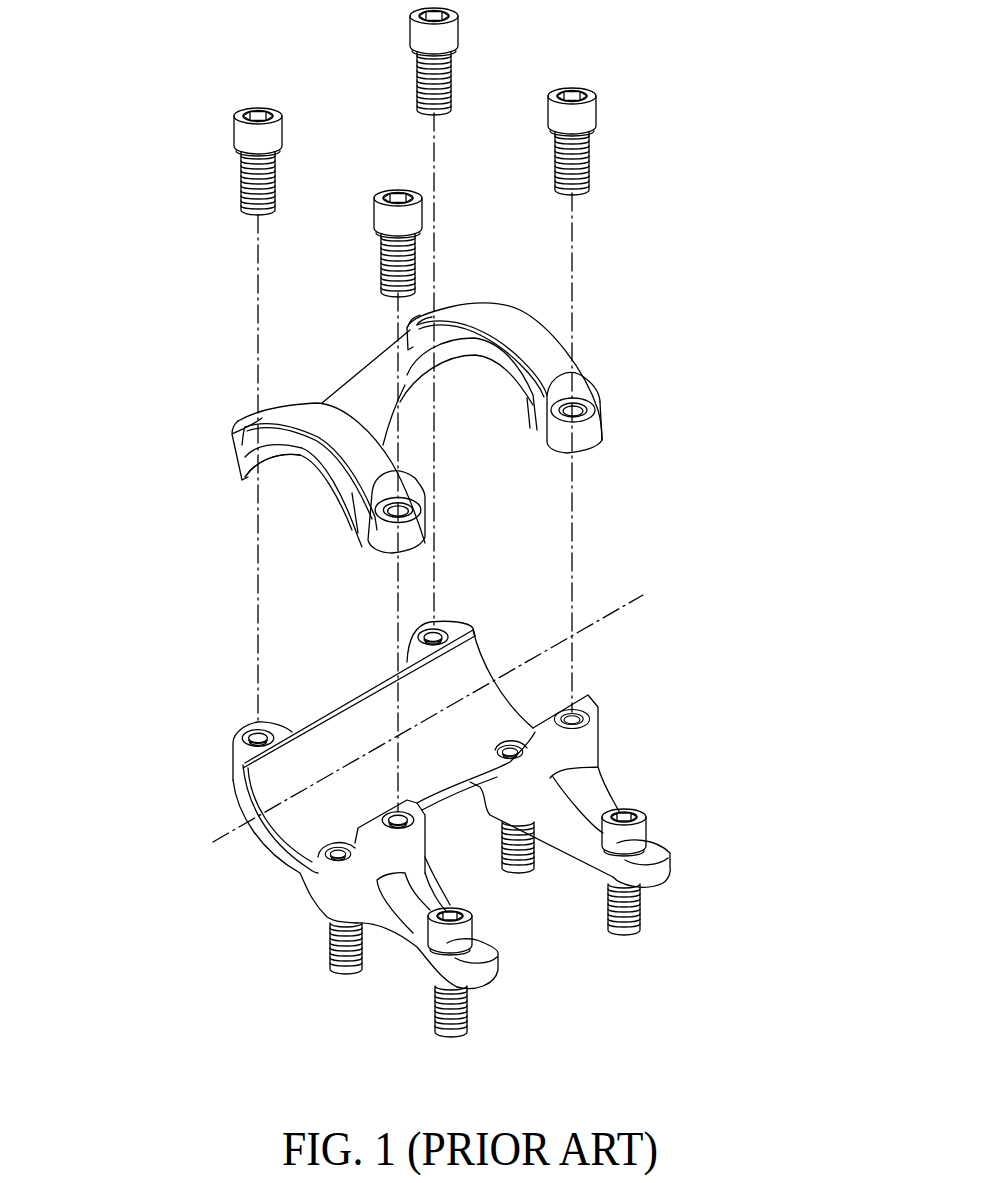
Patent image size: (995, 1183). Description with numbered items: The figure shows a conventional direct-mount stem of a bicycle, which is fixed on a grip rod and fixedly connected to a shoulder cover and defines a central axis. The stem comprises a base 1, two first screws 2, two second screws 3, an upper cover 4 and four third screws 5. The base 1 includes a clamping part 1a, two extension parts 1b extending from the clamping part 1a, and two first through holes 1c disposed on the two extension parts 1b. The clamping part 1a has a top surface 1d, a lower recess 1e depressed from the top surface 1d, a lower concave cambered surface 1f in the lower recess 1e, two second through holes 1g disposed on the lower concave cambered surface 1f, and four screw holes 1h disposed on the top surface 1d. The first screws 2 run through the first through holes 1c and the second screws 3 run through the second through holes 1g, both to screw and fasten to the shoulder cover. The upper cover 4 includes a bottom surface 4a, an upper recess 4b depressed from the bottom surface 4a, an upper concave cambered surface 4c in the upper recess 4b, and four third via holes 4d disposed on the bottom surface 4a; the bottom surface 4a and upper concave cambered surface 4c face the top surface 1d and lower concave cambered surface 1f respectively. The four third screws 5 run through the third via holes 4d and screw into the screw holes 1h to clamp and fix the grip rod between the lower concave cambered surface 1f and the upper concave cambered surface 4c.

The base 1 is at (449, 786).
The clamping part 1a is at (602, 735).
The extension parts 1b is at (672, 851).
The first through holes 1c is at (662, 882).
The top surface 1d is at (450, 620).
The lower recess 1e is at (263, 783).
The lower concave cambered surface 1f is at (290, 833).
The second through holes 1g is at (310, 880).
The screw holes 1h is at (250, 723).
The first screws 2 is at (605, 912).
The second screws 3 is at (433, 1000).
The upper cover 4 is at (451, 405).
The bottom surface 4a is at (592, 452).
The upper recess 4b is at (347, 517).
The upper concave cambered surface 4c is at (270, 465).
The third via holes 4d is at (597, 400).
The third screws 5 is at (588, 156).